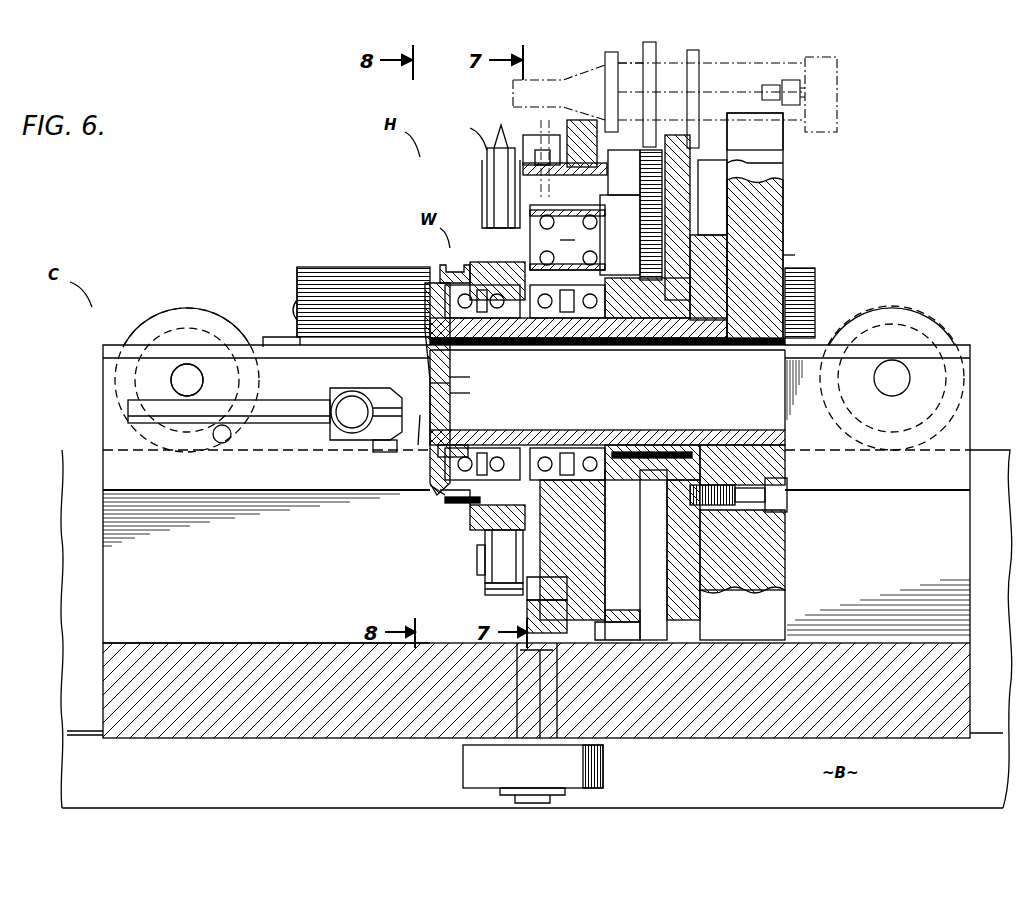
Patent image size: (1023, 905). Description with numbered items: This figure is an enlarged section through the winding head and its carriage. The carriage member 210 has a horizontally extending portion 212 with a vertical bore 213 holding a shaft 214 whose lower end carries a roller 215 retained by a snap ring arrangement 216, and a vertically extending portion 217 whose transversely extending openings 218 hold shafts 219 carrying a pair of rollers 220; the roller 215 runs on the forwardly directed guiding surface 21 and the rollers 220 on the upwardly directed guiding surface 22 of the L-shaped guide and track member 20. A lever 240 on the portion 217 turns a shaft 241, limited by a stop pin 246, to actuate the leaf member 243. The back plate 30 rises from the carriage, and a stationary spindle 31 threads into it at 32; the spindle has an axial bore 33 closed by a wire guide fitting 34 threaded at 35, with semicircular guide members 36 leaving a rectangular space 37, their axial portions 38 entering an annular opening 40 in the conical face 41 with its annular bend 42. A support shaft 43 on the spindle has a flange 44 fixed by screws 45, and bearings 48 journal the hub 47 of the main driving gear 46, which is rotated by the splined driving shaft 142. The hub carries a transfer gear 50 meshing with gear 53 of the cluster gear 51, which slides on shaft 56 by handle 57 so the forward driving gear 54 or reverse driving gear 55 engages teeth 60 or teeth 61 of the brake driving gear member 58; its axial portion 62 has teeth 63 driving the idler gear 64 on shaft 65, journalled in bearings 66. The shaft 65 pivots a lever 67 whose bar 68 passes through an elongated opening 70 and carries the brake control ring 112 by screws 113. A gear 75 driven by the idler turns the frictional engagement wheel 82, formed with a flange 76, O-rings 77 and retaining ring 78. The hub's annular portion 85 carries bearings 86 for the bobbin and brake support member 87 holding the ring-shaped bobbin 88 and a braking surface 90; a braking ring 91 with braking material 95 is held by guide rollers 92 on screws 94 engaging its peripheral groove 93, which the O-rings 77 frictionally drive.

The L-shaped guide and track member 20 is at (62, 518).
The forwardly directed guiding surface 21 is at (535, 756).
The upwardly directed guiding surface 22 is at (980, 450).
The back plate 30 is at (783, 220).
The stationary non-rotatable spindle 31 is at (613, 430).
The threaded engagement 32 is at (760, 345).
The axial bore 33 is at (607, 390).
The wire guide fitting 34 is at (450, 445).
The threaded engagement 35 is at (480, 445).
The semicircular support material guide members 36 is at (463, 394).
The rectangular space 37 is at (464, 378).
The axially extending portions 38 is at (428, 385).
The annular opening 40 is at (428, 372).
The forward conical face 41 is at (432, 470).
The annular bend 42 is at (413, 430).
The support shaft 43 is at (612, 338).
The outwardly extending flange 44 is at (705, 245).
The screws 45 is at (787, 500).
The main driving gear 46 is at (590, 634).
The hub 47 is at (598, 540).
The bearings 48 is at (557, 312).
The transfer gear 50 is at (624, 610).
The cluster gear 51 is at (630, 51).
The gear 53 is at (605, 57).
The forward driving gear 54 is at (700, 52).
The reverse driving gear 55 is at (660, 45).
The shaft 56 is at (740, 80).
The handle or knob arrangement 57 is at (837, 90).
The brake driving gear member 58 is at (712, 197).
The gear teeth 60 is at (700, 138).
The gear teeth 61 is at (680, 102).
The axially extending portion 62 is at (655, 318).
The gear teeth 63 is at (801, 248).
The idler gear 64 is at (612, 240).
The shaft 65 is at (581, 239).
The bearings 66 is at (567, 237).
The lever 67 is at (624, 172).
The rectangular bar 68 is at (575, 155).
The circumferentially elongated opening 70 is at (585, 170).
The gear 75 is at (640, 175).
The radially extending flange 76 is at (487, 178).
The O-rings 77 is at (495, 128).
The retaining ring 78 is at (487, 162).
The frictional engagement wheel 82 is at (462, 133).
The axially extending annular portion 85 is at (497, 312).
The bearings 86 is at (466, 312).
The bobbin and brake support member 87 is at (480, 503).
The ring-shaped bobbin 88 is at (440, 268).
The braking surface 90 is at (485, 262).
The braking ring 91 is at (475, 530).
The guide rollers 92 is at (500, 595).
The peripheral groove 93 is at (504, 556).
The screws 94 is at (480, 588).
The braking material 95 is at (460, 512).
The brake control ring 112 is at (530, 150).
The screws 113 is at (545, 135).
The splined driving shaft 142 is at (333, 275).
The carriage member 210 is at (266, 607).
The horizontally extending portion 212 is at (250, 646).
The vertical bore 213 is at (525, 738).
The shaft 214 is at (545, 655).
The roller 215 is at (603, 767).
The snap ring arrangement 216 is at (500, 797).
The vertically extending portion 217 is at (103, 420).
The transversely extending openings 218 is at (212, 378).
The shafts 219 is at (171, 378).
The rollers 220 is at (207, 320).
The lever 240 is at (140, 423).
The shaft 241 is at (352, 396).
The leaf member 243 is at (270, 336).
The stop pin 246 is at (222, 443).